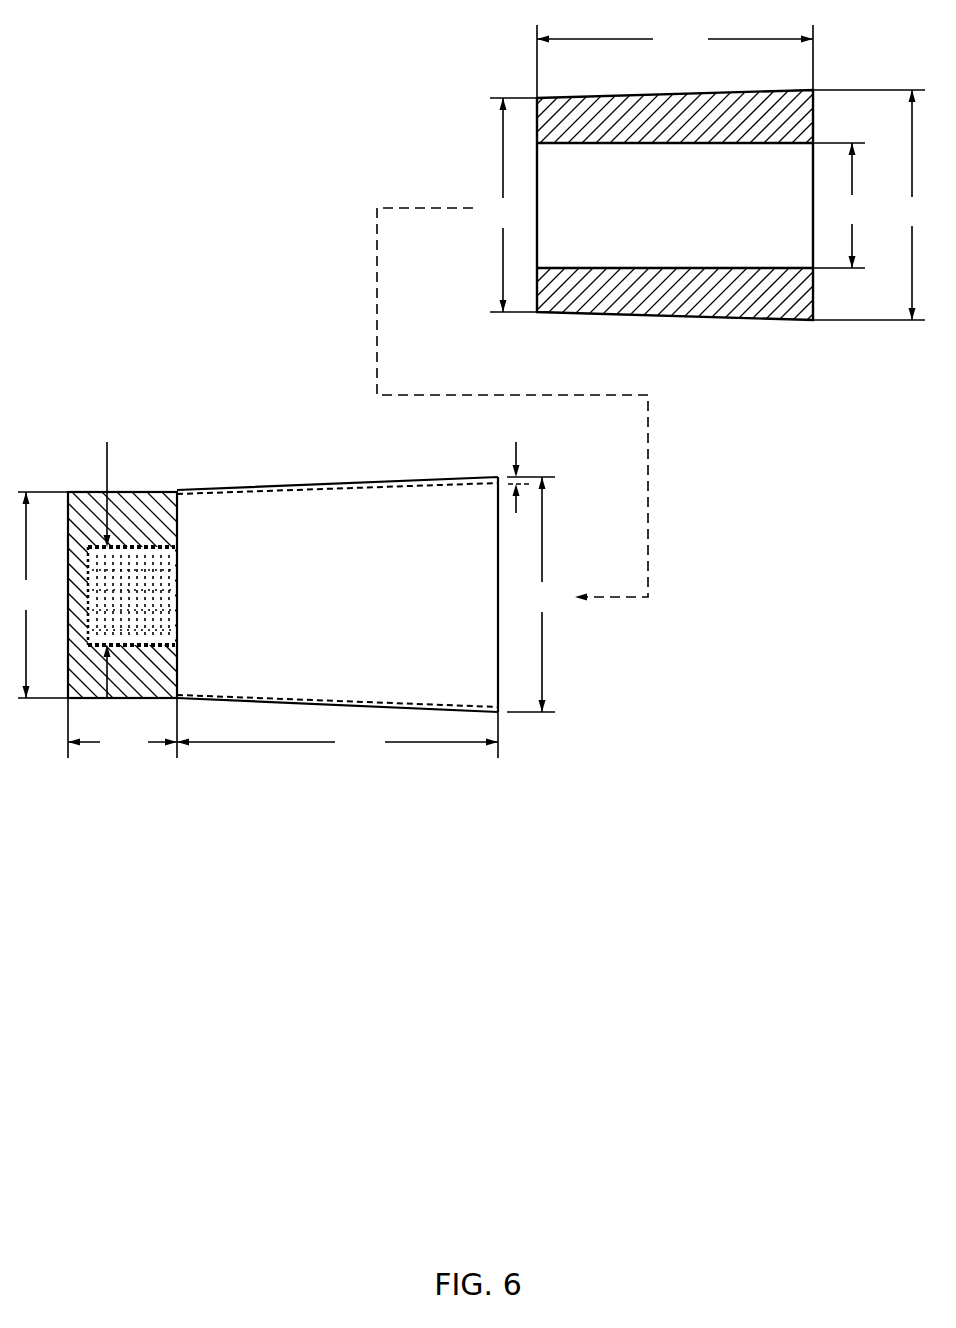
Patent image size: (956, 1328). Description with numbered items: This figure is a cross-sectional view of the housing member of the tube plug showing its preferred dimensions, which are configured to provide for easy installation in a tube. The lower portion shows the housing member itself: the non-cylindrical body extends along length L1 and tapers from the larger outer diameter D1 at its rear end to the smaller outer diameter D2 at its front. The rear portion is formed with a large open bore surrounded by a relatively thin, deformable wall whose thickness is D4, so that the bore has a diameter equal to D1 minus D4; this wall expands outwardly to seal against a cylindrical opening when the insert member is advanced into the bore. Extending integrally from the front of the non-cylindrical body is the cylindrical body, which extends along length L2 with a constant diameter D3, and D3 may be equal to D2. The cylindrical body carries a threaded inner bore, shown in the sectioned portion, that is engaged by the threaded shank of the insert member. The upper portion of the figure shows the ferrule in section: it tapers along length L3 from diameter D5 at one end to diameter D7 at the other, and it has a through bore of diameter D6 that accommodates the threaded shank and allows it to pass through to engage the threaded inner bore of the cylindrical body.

The ferrule length L3 is at (675, 61).
The ferrule small-end diameter D5 is at (513, 205).
The ferrule through-bore diameter D6 is at (842, 205).
The ferrule large-end diameter D7 is at (875, 205).
The non-cylindrical body rear diameter D1 is at (536, 594).
The non-cylindrical body front diameter D2 is at (42, 595).
The cylindrical body diameter D3 is at (107, 442).
The wall thickness D4 is at (516, 442).
The non-cylindrical body length L1 is at (337, 737).
The cylindrical body length L2 is at (122, 731).